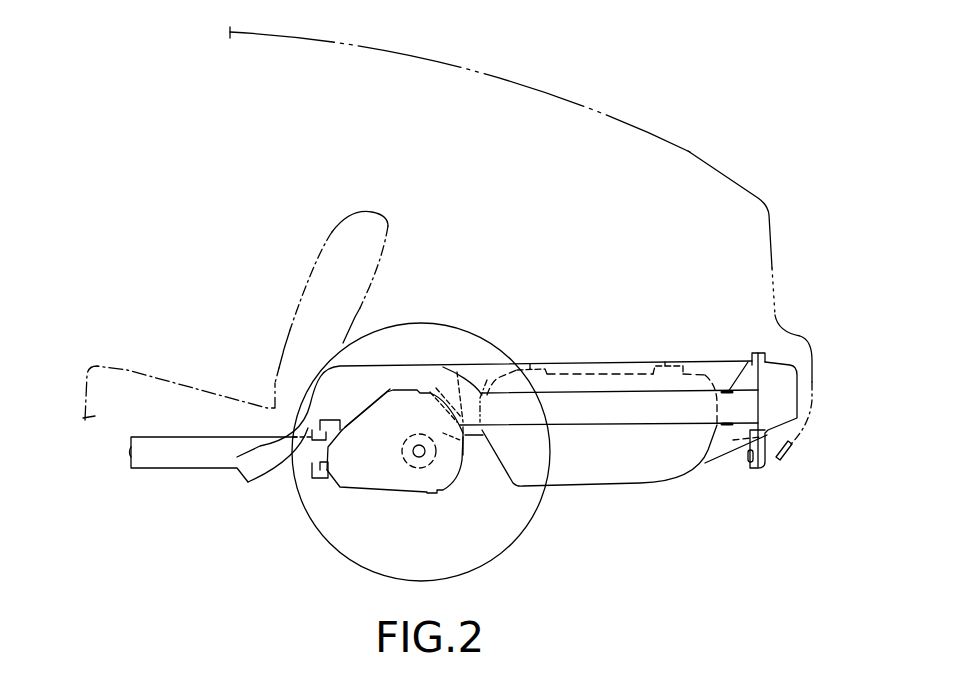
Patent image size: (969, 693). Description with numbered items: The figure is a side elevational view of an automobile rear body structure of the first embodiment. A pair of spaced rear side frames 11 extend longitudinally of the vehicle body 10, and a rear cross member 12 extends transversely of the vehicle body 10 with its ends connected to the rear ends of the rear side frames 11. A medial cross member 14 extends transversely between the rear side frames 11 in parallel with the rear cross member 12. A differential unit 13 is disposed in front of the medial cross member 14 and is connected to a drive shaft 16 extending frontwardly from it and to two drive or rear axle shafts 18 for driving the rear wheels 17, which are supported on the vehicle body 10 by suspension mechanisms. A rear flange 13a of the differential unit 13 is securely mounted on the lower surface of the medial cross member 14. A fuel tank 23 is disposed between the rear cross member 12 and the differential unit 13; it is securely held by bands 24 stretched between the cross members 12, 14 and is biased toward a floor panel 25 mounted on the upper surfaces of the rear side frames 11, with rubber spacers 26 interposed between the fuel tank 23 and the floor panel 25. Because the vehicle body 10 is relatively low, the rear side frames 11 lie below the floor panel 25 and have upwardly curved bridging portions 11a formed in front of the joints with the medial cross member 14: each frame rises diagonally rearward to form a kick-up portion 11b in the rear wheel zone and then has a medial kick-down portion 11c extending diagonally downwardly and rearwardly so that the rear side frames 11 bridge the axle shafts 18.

The vehicle body 10 is at (689, 153).
The rear side frames 11 is at (633, 417).
The upwardly curved portion 11a is at (405, 375).
The kick-up portion 11b is at (310, 420).
The medial kick-down portion 11c is at (451, 378).
The rear cross member 12 is at (796, 397).
The differential unit 13 is at (408, 483).
The rear flange 13a is at (481, 437).
The medial cross member 14 is at (487, 380).
The drive shaft 16 is at (178, 455).
The rear wheels 17 is at (306, 515).
The drive or rear axle shafts 18 is at (430, 457).
The fuel tank 23 is at (673, 466).
The bands 24 is at (721, 462).
The floor panel 25 is at (598, 364).
The rubber spacers 26 is at (546, 366).